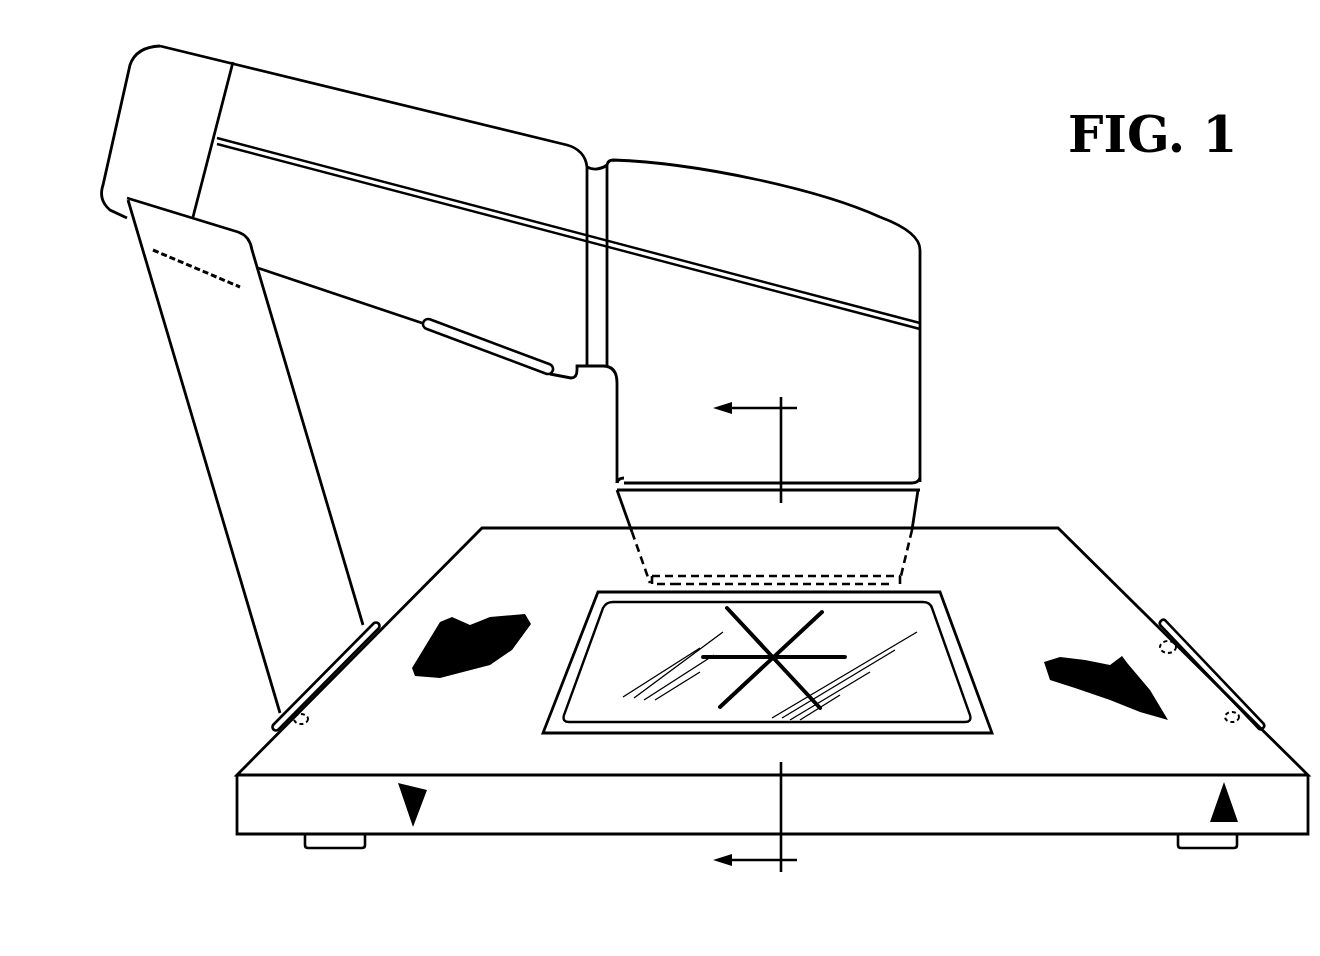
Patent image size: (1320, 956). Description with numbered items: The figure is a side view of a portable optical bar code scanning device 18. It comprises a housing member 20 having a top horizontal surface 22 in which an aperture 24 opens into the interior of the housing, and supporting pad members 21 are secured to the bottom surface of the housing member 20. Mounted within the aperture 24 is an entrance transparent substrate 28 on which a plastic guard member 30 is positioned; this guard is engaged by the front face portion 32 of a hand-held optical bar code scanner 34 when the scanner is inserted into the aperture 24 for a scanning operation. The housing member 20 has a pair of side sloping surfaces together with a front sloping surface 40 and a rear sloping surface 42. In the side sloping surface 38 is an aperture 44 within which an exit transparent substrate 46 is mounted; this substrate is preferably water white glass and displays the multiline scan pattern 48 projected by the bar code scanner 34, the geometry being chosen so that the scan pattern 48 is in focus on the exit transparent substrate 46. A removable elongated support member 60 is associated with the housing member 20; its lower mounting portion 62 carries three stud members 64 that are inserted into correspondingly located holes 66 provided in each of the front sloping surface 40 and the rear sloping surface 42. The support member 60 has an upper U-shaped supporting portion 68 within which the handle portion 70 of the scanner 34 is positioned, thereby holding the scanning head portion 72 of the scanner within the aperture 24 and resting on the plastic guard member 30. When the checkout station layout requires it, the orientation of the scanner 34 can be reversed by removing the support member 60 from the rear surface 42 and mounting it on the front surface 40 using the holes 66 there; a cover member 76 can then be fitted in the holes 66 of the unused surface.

The bar code scanning device 18 is at (1146, 491).
The housing member 20 is at (1020, 834).
The supporting pad members 21 is at (305, 849).
The top horizontal surface 22 is at (967, 528).
The aperture 24 is at (650, 583).
The entrance transparent substrate 28 is at (825, 580).
The plastic guard member 30 is at (882, 573).
The front face portion 32 is at (780, 573).
The hand-held optical bar code scanner 34 is at (873, 213).
The side sloping surface 38 is at (1083, 563).
The front sloping surface 40 is at (1135, 600).
The rear sloping surface 42 is at (460, 545).
The aperture 44 is at (967, 660).
The exit transparent substrate 46 is at (945, 708).
The multiline scan pattern 48 is at (823, 708).
The removable elongated support member 60 is at (187, 410).
The lower mounting portion 62 is at (273, 727).
The stud members 64 is at (367, 652).
The holes 66 is at (1187, 643).
The upper U-shaped supporting portion 68 is at (268, 292).
The handle portion 70 is at (102, 205).
The scanning head portion 72 is at (922, 417).
The cover member 76 is at (1230, 693).